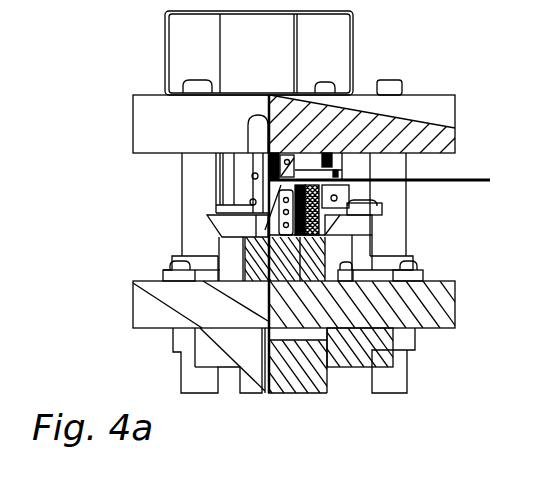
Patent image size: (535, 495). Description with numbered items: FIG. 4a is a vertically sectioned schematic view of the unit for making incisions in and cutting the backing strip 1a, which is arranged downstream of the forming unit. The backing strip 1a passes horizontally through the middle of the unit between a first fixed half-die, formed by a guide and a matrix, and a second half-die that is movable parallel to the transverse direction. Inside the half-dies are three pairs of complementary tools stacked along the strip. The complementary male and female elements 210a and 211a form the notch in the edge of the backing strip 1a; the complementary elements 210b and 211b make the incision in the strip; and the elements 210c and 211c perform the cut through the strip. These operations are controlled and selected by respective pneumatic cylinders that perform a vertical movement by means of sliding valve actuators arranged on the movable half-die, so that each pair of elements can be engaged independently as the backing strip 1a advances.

The male element for notch 210a is at (148, 182).
The female element for notch 211a is at (251, 175).
The complementary element for incision 210b is at (153, 183).
The complementary element for incision 211b is at (249, 201).
The element for cut 210c is at (153, 240).
The element for cut 211c is at (272, 223).
The backing strip 1a is at (490, 182).